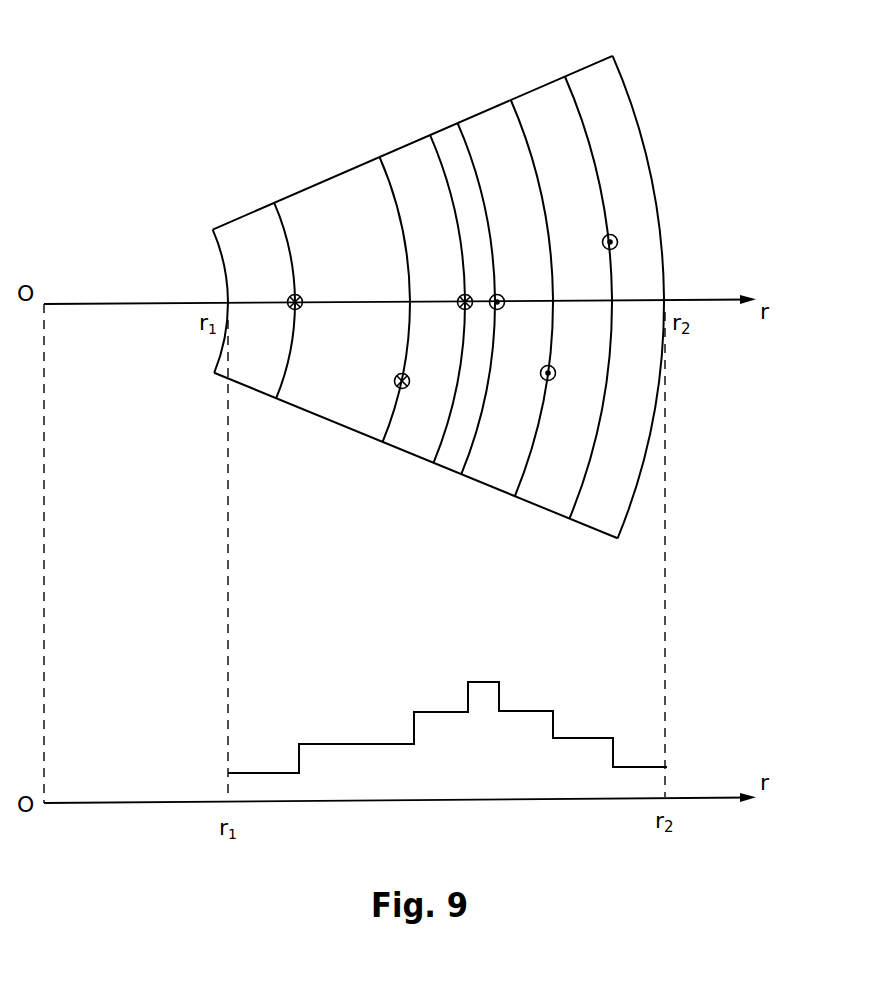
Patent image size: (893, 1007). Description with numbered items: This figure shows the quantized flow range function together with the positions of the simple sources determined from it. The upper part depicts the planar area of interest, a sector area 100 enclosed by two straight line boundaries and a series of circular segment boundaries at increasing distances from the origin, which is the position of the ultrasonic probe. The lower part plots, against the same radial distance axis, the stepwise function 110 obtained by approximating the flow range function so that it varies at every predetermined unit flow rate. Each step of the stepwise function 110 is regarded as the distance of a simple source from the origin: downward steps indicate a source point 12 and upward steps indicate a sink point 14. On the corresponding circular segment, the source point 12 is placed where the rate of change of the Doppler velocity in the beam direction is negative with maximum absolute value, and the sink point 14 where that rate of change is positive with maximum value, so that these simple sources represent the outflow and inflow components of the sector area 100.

The sector area 100 is at (587, 72).
The source point 12 is at (618, 240).
The sink point 14 is at (404, 389).
The stepwise function 110 is at (585, 738).